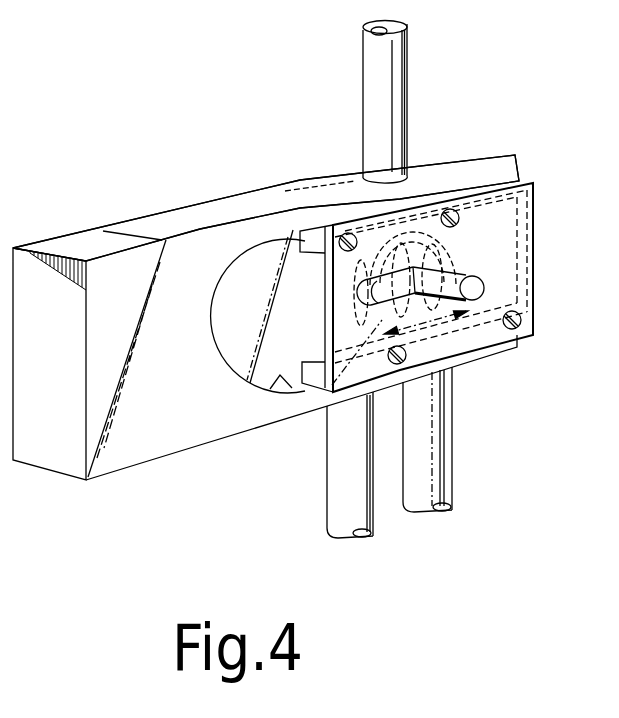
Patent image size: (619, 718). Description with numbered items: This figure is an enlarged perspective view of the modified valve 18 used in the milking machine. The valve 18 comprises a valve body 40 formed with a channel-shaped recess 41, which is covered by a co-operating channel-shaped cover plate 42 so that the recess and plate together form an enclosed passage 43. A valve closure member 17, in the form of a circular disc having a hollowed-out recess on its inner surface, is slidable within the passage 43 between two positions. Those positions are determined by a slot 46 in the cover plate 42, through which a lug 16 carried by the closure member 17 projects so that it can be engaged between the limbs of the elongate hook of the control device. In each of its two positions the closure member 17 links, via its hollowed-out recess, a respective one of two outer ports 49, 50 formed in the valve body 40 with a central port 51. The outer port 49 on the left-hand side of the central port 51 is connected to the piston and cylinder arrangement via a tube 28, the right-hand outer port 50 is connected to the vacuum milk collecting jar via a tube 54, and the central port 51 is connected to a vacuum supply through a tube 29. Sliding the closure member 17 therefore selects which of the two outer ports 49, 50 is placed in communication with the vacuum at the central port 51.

The lug 16 is at (479, 284).
The valve closure member 17 is at (405, 235).
The modified valve 18 is at (217, 192).
The tube 28 is at (342, 535).
The tube 29 is at (365, 40).
The valve body 40 is at (103, 231).
The channel-shaped recess 41 is at (278, 381).
The channel-shaped cover plate 42 is at (478, 197).
The enclosed passage 43 is at (320, 276).
The slot 46 is at (363, 289).
The outer port 49 is at (332, 385).
The outer port 50 is at (418, 296).
The central port 51 is at (394, 330).
The tube 54 is at (441, 497).